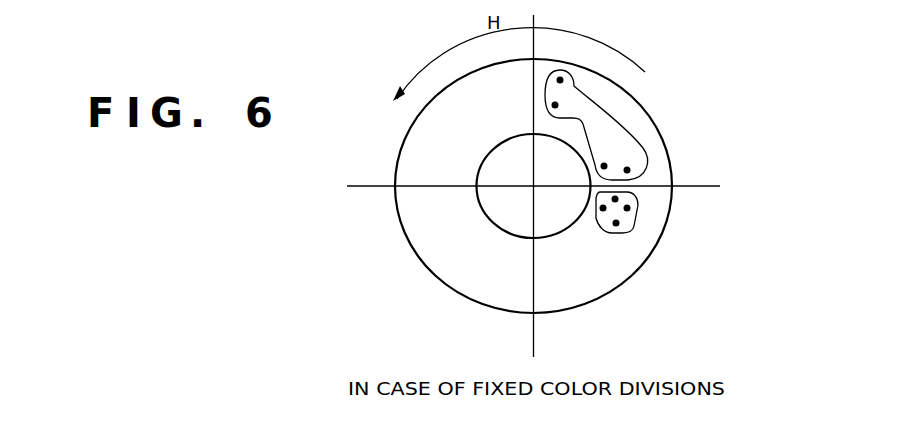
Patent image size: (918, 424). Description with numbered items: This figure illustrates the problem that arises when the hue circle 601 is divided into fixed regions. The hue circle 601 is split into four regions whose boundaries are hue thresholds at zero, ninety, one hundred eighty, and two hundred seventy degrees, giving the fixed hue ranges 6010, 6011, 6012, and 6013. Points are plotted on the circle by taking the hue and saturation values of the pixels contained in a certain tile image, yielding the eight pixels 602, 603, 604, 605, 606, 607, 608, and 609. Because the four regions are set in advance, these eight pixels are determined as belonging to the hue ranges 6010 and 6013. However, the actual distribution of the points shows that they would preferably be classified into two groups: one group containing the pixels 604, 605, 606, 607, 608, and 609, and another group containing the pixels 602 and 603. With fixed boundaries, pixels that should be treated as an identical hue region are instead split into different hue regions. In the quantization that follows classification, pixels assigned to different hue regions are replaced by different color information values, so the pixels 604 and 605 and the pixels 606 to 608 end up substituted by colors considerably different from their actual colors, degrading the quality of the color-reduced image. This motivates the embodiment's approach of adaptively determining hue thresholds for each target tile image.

The hue circle 601 is at (366, 215).
The pixel 602 is at (562, 73).
The pixel 603 is at (551, 105).
The pixel 604 is at (605, 164).
The pixel 605 is at (631, 168).
The pixel 606 is at (598, 225).
The pixel 607 is at (633, 224).
The pixel 608 is at (640, 204).
The pixel 609 is at (640, 187).
The hue range 6010 is at (634, 95).
The hue range 6011 is at (413, 118).
The hue range 6012 is at (440, 282).
The hue range 6013 is at (627, 282).